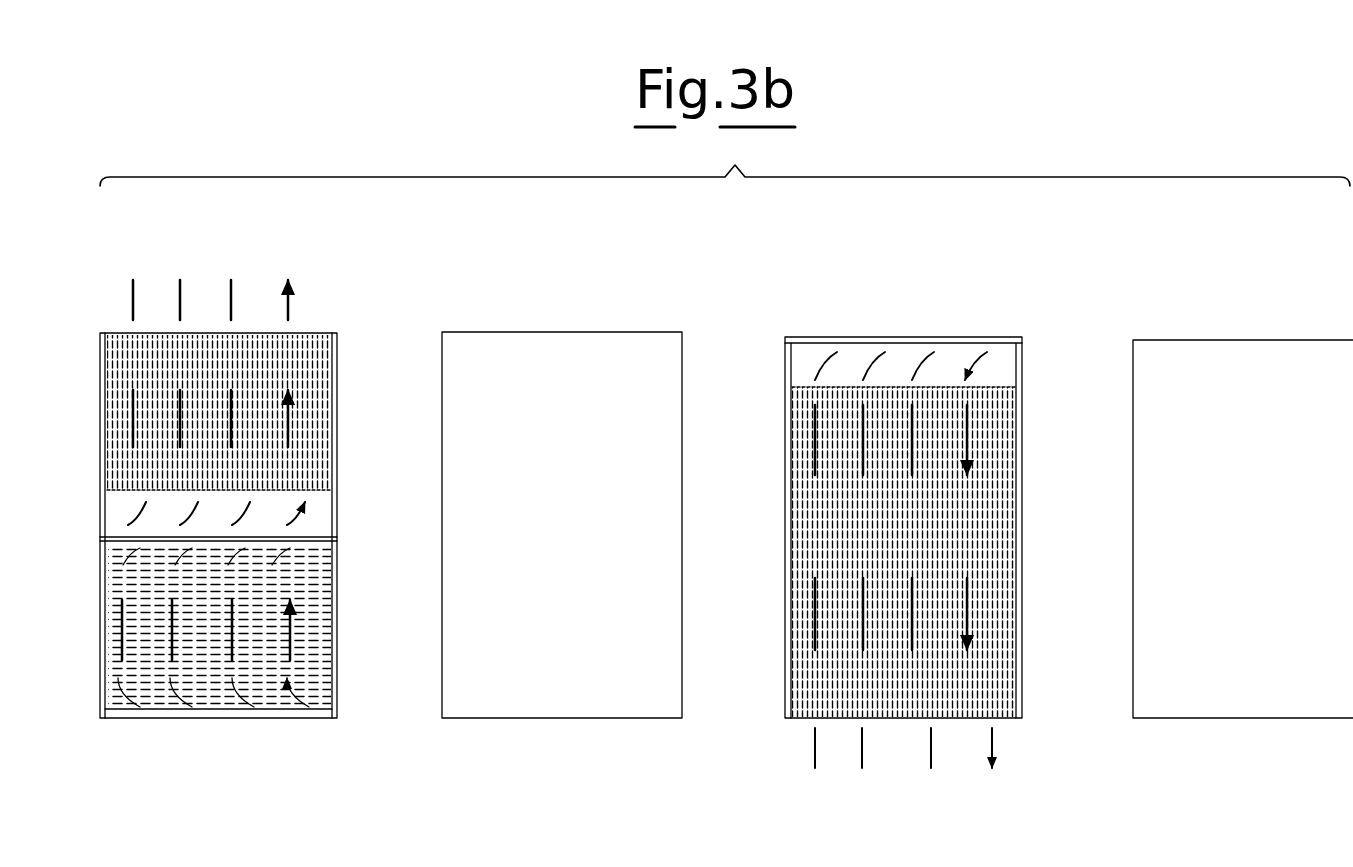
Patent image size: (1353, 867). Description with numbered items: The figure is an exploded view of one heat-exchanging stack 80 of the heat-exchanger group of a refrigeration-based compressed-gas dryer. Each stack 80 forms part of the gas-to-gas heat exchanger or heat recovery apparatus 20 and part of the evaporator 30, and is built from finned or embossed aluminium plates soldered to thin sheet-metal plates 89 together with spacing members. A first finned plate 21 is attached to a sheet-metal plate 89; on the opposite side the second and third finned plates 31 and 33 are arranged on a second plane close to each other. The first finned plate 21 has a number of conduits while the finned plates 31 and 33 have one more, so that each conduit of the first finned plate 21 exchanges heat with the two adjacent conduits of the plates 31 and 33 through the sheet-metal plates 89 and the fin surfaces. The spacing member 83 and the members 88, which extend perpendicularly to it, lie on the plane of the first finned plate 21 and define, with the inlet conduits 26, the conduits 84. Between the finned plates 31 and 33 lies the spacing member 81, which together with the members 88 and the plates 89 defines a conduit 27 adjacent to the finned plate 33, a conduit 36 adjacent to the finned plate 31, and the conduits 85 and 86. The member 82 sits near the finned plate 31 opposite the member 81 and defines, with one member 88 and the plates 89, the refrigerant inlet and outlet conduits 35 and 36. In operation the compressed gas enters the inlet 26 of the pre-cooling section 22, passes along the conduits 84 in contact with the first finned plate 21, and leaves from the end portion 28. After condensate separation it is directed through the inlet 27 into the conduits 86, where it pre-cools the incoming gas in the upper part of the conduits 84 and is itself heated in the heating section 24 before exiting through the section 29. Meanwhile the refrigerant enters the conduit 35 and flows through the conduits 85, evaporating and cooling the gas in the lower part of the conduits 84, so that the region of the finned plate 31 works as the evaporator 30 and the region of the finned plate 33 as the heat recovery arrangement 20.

The gas-to-gas heat exchanger 20 is at (340, 425).
The first finned plate 21 is at (995, 543).
The pre-cooling section 22 is at (803, 453).
The heating section 24 is at (115, 458).
The inlet conduit 26 is at (998, 368).
The conduit 27 is at (118, 513).
The end portion 28 is at (902, 720).
The section 29 is at (228, 300).
The evaporator 30 is at (340, 645).
The second finned plate 31 is at (313, 620).
The third finned plate 33 is at (118, 432).
The inlet conduit 35 is at (340, 713).
The outlet conduit 36 is at (340, 547).
The heat-exchanging stack 80 is at (752, 242).
The spacing member 81 is at (105, 541).
The spacing member 82 is at (218, 718).
The spacing member 83 is at (977, 341).
The conduits 84 is at (967, 443).
The conduits 85 is at (170, 643).
The conduits 86 is at (172, 418).
The spacing members 88 is at (100, 360).
The sheet-metal plates 89 is at (596, 333).